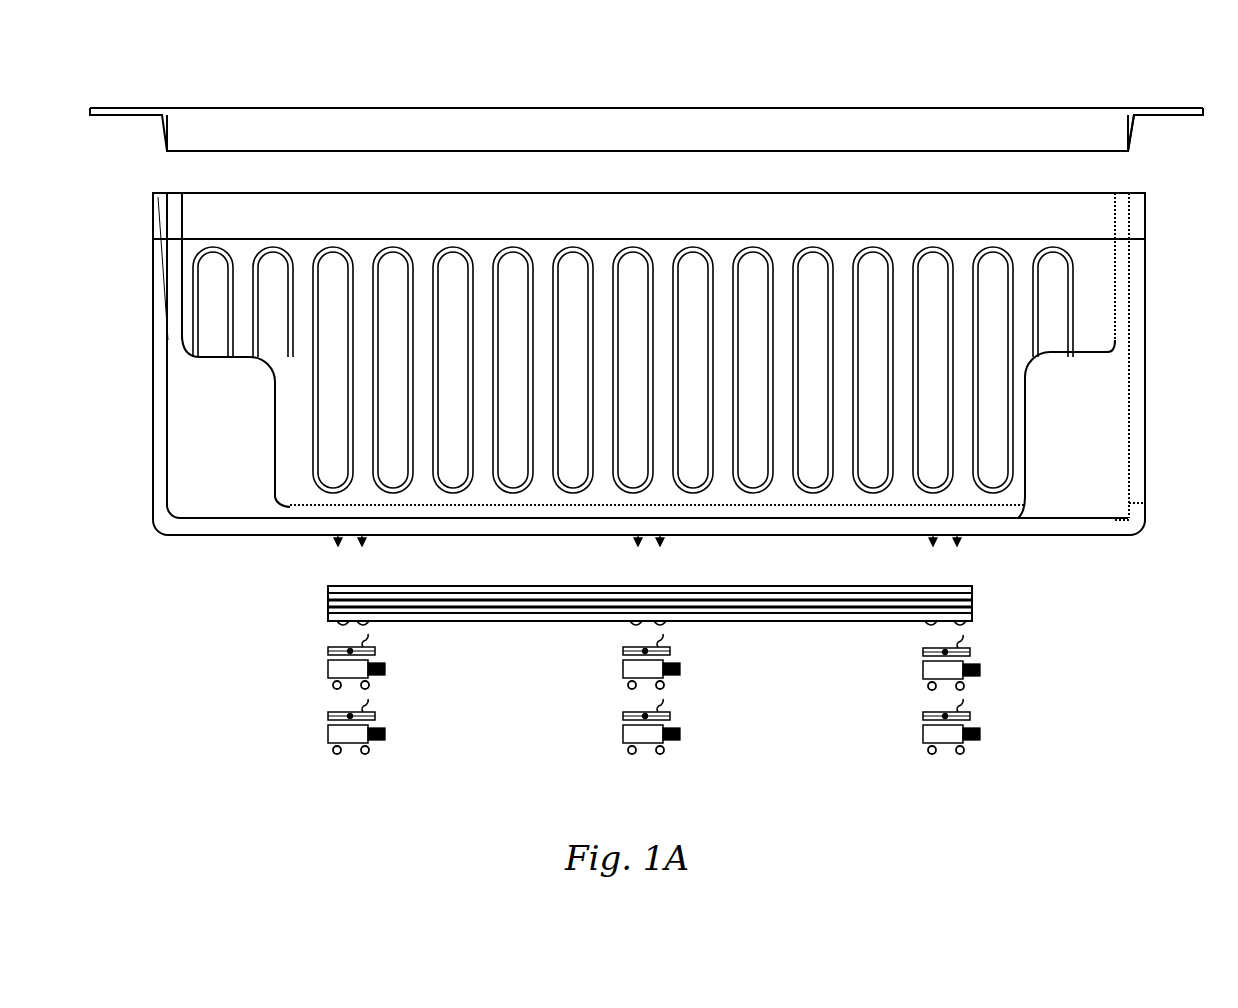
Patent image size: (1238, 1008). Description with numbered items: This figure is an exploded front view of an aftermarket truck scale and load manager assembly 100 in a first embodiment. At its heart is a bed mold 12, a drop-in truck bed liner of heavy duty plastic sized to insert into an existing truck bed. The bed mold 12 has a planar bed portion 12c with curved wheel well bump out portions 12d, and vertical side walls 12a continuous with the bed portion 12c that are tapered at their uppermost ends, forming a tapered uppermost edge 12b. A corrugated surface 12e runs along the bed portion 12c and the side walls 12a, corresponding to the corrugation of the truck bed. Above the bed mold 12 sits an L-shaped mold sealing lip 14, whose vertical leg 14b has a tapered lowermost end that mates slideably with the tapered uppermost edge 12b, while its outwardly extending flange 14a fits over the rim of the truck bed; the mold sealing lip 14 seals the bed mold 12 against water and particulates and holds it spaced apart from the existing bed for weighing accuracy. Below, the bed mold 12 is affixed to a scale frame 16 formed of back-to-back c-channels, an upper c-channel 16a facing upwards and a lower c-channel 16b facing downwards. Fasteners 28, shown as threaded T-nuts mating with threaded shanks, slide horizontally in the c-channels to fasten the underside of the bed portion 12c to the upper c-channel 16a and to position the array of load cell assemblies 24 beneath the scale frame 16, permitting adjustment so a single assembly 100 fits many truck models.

The aftermarket truck scale and load manager assembly 100 is at (1087, 603).
The bed mold 12 is at (203, 227).
The side walls 12a is at (232, 292).
The tapered uppermost edge 12b is at (1128, 237).
The bed portion 12c is at (297, 520).
The wheel well bump out portions 12d is at (195, 455).
The corrugated surface 12e is at (1067, 285).
The mold sealing lip 14 is at (572, 130).
The flange 14a is at (1192, 108).
The vertical leg 14b is at (1127, 122).
The scale frame 16 is at (977, 592).
The upper c-channel 16a is at (607, 590).
The lower c-channel 16b is at (830, 623).
The load cell assemblies 24 is at (342, 732).
The fasteners 28 is at (362, 542).